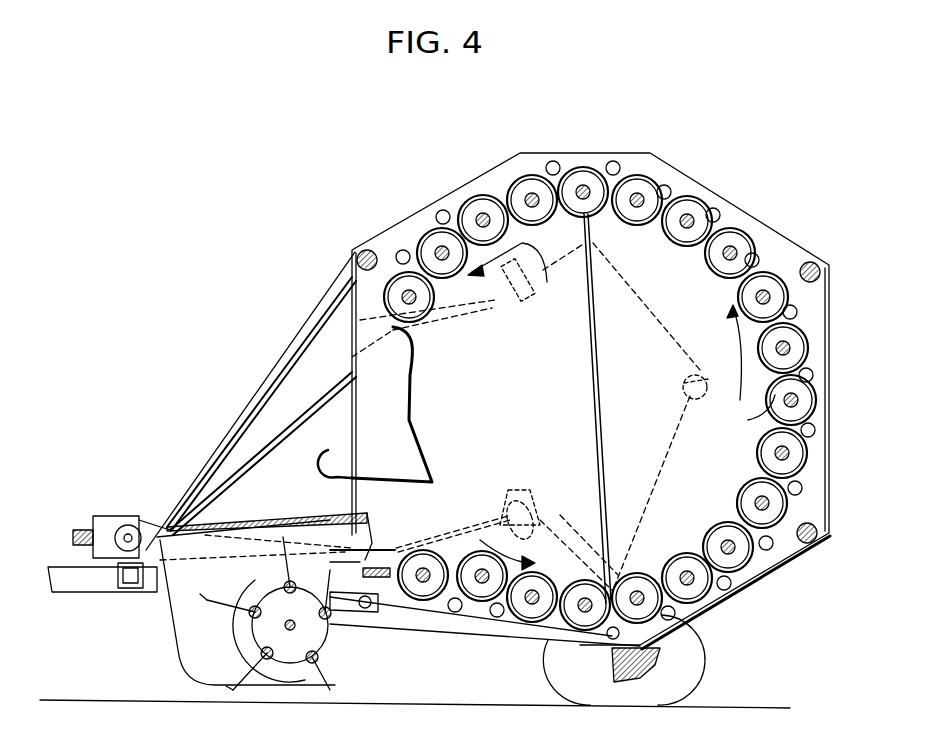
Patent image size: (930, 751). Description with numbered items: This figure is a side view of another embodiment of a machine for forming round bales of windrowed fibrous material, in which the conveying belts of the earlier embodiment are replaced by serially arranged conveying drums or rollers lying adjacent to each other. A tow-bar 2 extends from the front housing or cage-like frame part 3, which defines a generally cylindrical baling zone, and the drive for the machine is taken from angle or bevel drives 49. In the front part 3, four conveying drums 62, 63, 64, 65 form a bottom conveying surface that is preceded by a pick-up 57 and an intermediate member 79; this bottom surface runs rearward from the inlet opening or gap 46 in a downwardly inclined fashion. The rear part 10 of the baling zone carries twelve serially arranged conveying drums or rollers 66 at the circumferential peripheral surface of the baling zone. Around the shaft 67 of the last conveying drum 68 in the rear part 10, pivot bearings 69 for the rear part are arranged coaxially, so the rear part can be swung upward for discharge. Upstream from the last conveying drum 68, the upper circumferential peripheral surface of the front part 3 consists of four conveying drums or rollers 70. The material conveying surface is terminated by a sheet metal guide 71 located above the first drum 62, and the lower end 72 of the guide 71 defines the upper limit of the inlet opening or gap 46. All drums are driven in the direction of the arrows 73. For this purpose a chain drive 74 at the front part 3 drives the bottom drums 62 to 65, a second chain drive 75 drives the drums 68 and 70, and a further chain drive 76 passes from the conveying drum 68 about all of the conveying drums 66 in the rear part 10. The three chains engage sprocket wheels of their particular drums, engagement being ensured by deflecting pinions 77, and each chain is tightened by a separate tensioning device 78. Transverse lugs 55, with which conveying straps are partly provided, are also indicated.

The tow-bar 2 is at (95, 590).
The front housing or cage-like frame part 3 is at (573, 383).
The rear part 10 is at (652, 377).
The inlet opening or gap 46 is at (390, 522).
The angle or bevel drives 49 is at (105, 520).
The transverse lugs 55 is at (772, 462).
The pick-up 57 is at (245, 635).
The conveying drum 62 is at (430, 600).
The conveying drum 63 is at (478, 600).
The conveying drum 64 is at (530, 620).
The conveying drum 65 is at (592, 630).
The conveying drums or rollers 66 is at (738, 493).
The shaft 67 is at (593, 182).
The last conveying drum 68 is at (583, 168).
The pivot bearings 69 is at (606, 222).
The conveying drums or rollers 70 is at (520, 202).
The sheet metal guide 71 is at (412, 420).
The lower end 72 is at (372, 476).
The arrows 73 is at (532, 548).
The chain drive 74 is at (500, 510).
The second chain drive 75 is at (492, 312).
The chain drive 76 is at (672, 330).
The deflecting pinions 77 is at (402, 262).
The tensioning device 78 is at (688, 392).
The intermediate member 79 is at (387, 585).